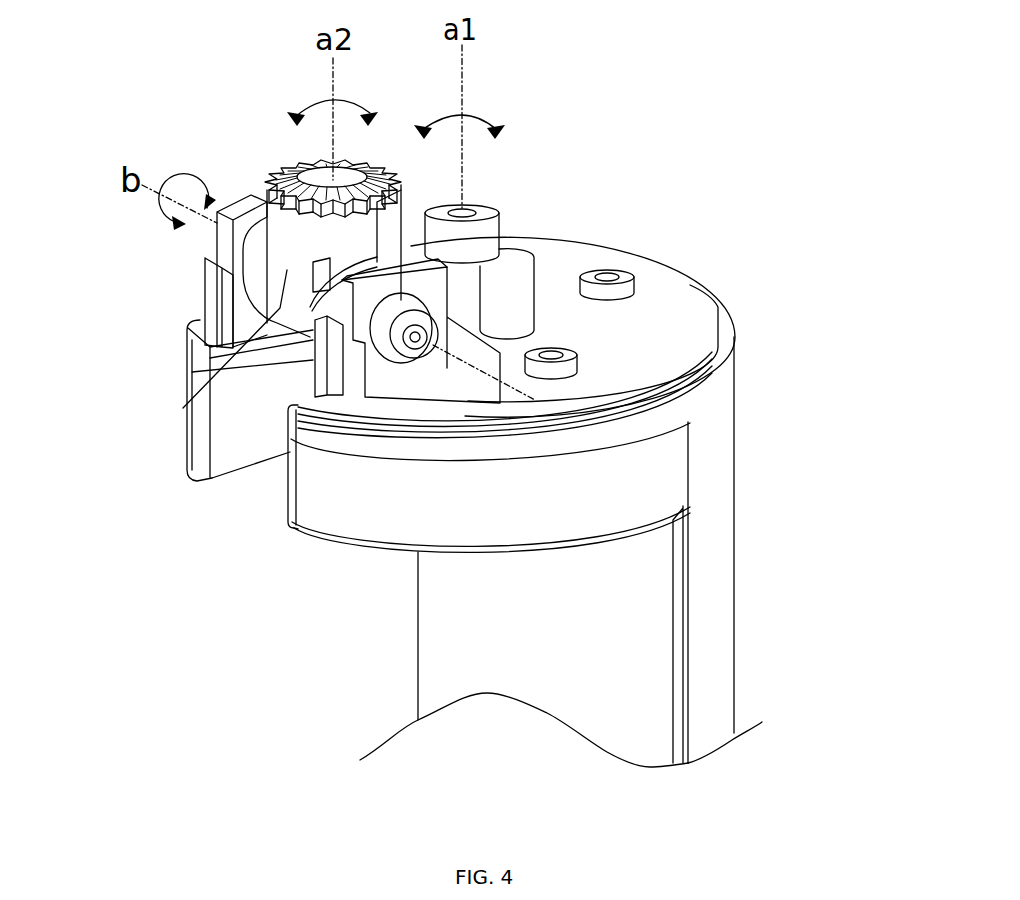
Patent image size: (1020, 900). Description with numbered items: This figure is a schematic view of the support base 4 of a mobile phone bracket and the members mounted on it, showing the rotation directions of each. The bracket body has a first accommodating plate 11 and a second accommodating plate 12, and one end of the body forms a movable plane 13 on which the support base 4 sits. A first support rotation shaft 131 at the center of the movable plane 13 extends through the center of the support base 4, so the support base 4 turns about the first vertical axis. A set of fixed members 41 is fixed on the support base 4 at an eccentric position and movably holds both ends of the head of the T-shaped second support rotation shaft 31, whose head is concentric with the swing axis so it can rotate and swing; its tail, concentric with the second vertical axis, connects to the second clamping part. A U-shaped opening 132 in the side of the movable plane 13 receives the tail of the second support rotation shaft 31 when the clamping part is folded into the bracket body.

The support base 4 is at (680, 307).
The first accommodating plate 11 is at (722, 550).
The second accommodating plate 12 is at (433, 645).
The movable plane 13 is at (727, 347).
The first support rotation shaft 131 is at (490, 245).
The U-shaped opening 132 is at (267, 420).
The second support rotation shaft 31 is at (185, 402).
The fixed members 41 is at (388, 377).